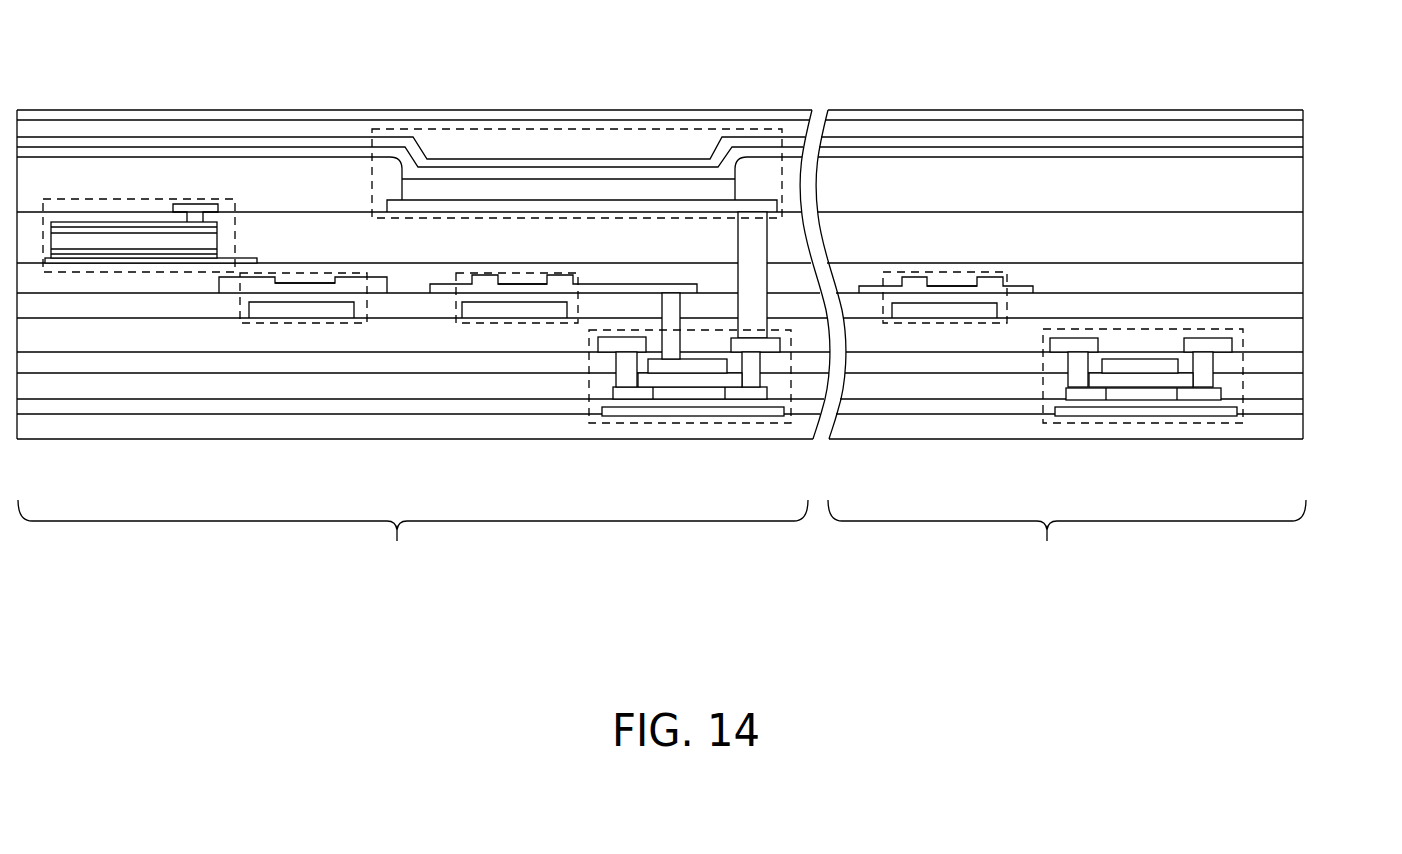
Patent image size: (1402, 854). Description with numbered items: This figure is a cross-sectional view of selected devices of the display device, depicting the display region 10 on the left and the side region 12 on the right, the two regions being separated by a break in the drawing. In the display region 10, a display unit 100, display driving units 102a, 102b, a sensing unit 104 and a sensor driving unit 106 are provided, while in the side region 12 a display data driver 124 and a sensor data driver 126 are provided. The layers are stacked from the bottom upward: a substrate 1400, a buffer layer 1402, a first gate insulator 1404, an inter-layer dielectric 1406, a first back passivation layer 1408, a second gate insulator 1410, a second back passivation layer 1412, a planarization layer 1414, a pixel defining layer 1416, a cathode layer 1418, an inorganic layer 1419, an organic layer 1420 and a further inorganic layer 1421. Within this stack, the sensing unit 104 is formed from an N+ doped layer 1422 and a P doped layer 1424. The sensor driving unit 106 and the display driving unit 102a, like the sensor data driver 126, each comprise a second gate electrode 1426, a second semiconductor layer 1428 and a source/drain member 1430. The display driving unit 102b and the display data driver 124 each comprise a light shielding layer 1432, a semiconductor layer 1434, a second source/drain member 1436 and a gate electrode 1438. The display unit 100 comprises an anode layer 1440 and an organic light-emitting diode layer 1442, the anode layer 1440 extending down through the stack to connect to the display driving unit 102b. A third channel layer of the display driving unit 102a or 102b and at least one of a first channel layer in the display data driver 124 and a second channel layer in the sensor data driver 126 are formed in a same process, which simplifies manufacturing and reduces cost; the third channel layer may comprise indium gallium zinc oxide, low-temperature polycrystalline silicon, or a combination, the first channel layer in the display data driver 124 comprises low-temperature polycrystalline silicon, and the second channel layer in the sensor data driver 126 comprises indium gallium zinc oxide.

The display region 10 is at (413, 538).
The side region 12 is at (1067, 538).
The display unit 100 is at (571, 128).
The sensing unit 104 is at (135, 198).
The sensor driving unit 106 is at (312, 325).
The display driving unit 102a is at (517, 325).
The display driving unit 102b is at (681, 425).
The display data driver 124 is at (1133, 425).
The sensor data driver 126 is at (951, 325).
The substrate 1400 is at (1280, 430).
The buffer layer 1402 is at (1287, 408).
The first gate insulator 1404 is at (1287, 388).
The inter-layer dielectric 1406 is at (1287, 362).
The first back passivation layer 1408 is at (1278, 328).
The second gate insulator 1410 is at (1278, 305).
The second back passivation layer 1412 is at (1278, 278).
The planarization layer 1414 is at (1278, 237).
The pixel defining layer 1416 is at (1278, 190).
The cathode layer 1418 is at (1292, 152).
The inorganic layer 1419 is at (1295, 142).
The organic layer 1420 is at (1290, 127).
The inorganic layer 1421 is at (1258, 112).
The N+ doped layer 1422 is at (70, 263).
The P doped layer 1424 is at (70, 224).
The second gate electrode 1426 is at (256, 306).
The second semiconductor layer 1428 is at (300, 283).
The source/drain member 1430 is at (383, 284).
The light shielding layer 1432 is at (643, 414).
The semiconductor layer 1434 is at (715, 396).
The second source/drain member 1436 is at (623, 376).
The gate electrode 1438 is at (711, 364).
The anode layer 1440 is at (752, 205).
The organic light-emitting diode (OLED) layer 1442 is at (680, 188).